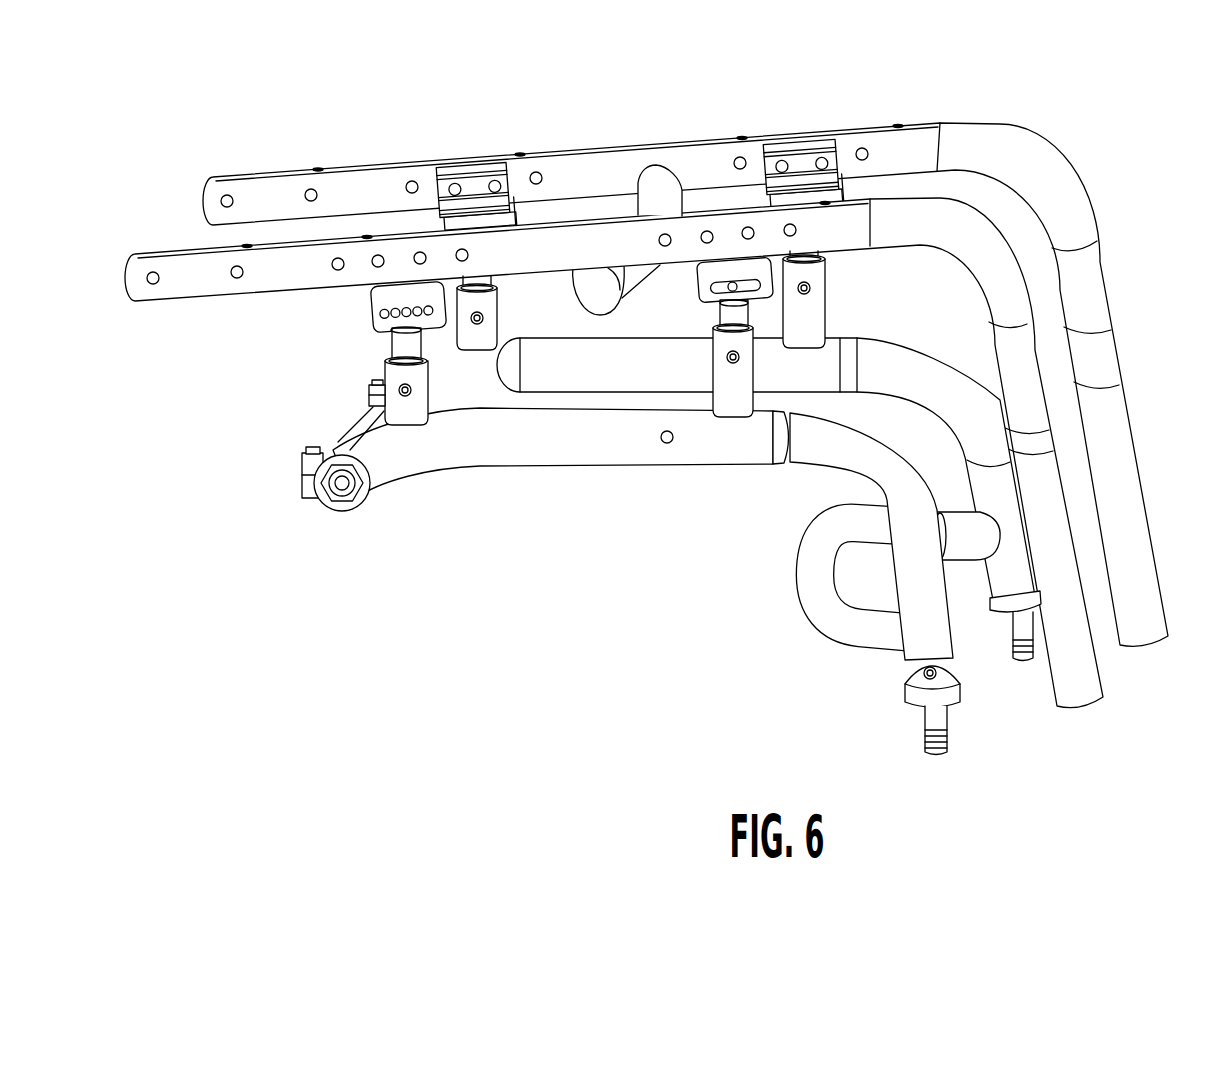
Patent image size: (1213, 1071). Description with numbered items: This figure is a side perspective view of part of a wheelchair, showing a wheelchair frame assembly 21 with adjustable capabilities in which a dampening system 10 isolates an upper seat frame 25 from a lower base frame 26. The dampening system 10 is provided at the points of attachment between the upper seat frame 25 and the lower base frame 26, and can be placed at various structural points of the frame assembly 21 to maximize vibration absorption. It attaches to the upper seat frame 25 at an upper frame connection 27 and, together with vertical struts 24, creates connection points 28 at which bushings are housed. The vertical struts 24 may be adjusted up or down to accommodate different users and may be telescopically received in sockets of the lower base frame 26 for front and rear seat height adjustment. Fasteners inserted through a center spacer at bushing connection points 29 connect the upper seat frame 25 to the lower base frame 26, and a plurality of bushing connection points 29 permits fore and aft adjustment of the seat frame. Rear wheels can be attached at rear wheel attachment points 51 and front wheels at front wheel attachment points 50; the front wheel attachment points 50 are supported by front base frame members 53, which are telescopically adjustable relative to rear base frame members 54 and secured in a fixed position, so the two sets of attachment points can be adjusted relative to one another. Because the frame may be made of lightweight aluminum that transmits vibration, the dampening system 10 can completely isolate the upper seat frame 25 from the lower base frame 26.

The wheelchair frame assembly 21 is at (898, 112).
The upper seat frame 25 is at (1028, 172).
The bushing connection points 29 is at (397, 305).
The dampening system 10 is at (506, 288).
The upper frame connection 27 is at (385, 297).
The connection points 28 is at (358, 343).
The vertical struts 24 is at (407, 345).
The rear wheel attachment points 51 is at (318, 512).
The lower base frame 26 is at (547, 443).
The rear base frame members 54 is at (647, 355).
The front base frame members 53 is at (897, 503).
The front wheel attachment points 50 is at (1025, 690).